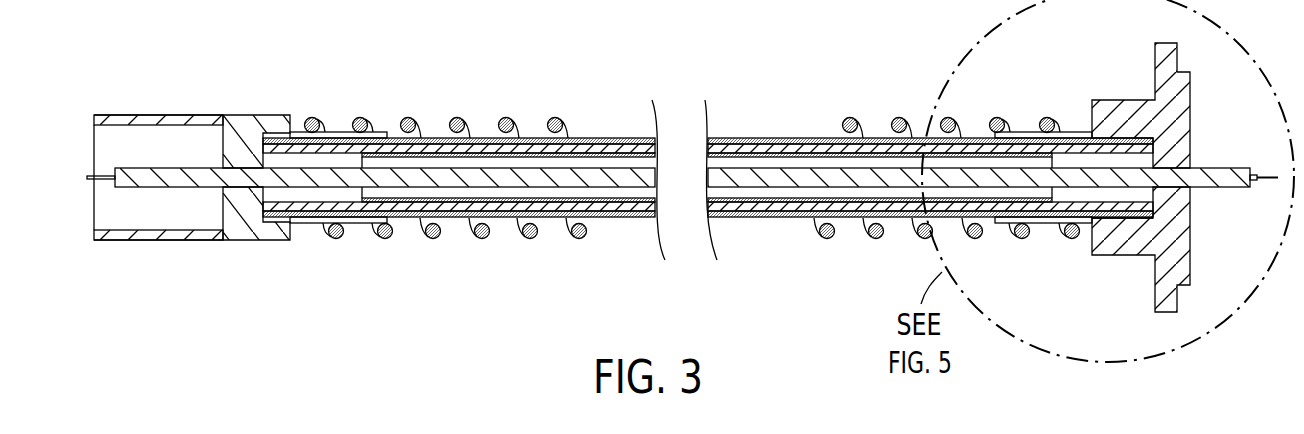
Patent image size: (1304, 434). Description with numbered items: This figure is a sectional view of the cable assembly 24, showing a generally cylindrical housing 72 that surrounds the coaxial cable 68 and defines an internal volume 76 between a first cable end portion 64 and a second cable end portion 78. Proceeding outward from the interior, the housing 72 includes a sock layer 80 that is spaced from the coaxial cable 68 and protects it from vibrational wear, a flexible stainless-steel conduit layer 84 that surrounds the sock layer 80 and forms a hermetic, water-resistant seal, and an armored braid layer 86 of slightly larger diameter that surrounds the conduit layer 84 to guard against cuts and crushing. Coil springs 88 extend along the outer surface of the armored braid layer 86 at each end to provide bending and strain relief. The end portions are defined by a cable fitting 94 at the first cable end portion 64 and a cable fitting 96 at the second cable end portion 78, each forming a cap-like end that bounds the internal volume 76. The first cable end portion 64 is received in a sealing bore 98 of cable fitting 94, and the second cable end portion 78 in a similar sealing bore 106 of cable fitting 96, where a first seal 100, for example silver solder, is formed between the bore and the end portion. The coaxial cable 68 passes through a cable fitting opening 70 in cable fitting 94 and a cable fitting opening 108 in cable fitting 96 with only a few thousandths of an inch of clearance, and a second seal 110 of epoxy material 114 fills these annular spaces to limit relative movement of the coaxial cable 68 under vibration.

The cable assembly 24 is at (396, 90).
The first cable end portion 64 is at (1101, 131).
The coaxial cable 68 is at (1236, 167).
The cable fitting opening 70 is at (1184, 185).
The housing 72 is at (887, 97).
The internal volume 76 is at (786, 163).
The second cable end portion 78 is at (283, 138).
The sock layer 80 is at (795, 156).
The conduit layer 84 is at (746, 140).
The armored braid layer 86 is at (634, 140).
The coil springs 88 is at (556, 118).
The cable fitting 94 is at (1154, 293).
The cable fitting 96 is at (268, 188).
The sealing bore 98 is at (1137, 208).
The first seal 100 is at (393, 135).
The sealing bore 106 is at (310, 212).
The cable fitting opening 108 is at (240, 179).
The second seal 110 is at (226, 188).
The epoxy material 114 is at (235, 188).